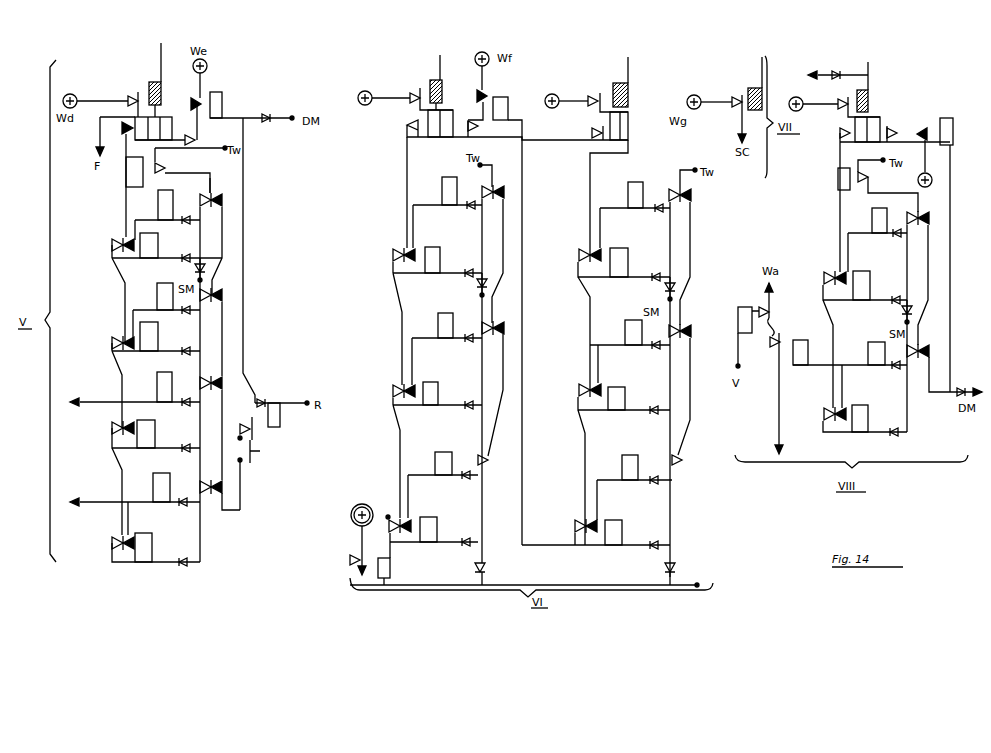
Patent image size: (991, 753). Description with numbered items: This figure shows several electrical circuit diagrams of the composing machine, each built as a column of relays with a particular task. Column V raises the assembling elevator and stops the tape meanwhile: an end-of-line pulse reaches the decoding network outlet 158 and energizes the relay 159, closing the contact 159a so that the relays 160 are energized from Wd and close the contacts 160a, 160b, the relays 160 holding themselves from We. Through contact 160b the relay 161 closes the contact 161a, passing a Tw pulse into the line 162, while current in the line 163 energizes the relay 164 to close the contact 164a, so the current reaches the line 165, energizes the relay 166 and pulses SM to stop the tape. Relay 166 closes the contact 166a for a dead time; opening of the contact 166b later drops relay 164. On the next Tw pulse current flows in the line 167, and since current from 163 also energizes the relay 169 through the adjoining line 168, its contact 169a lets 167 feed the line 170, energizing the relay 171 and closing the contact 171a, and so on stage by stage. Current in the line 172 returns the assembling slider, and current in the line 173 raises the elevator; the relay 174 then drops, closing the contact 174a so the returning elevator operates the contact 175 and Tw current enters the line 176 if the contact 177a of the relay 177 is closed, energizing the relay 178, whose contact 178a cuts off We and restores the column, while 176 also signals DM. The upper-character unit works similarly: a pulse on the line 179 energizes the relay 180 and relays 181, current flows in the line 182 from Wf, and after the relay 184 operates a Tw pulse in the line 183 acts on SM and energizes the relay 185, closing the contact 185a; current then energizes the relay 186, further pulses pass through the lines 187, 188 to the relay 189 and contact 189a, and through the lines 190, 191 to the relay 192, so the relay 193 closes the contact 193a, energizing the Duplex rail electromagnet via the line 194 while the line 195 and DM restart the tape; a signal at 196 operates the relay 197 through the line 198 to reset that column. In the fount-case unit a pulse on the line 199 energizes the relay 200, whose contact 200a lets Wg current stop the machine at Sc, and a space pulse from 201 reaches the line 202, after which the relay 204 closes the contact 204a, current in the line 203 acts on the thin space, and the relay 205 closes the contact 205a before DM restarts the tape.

The decoding network outlet 158 is at (160, 68).
The relay 159 is at (150, 84).
The contact 159a is at (130, 94).
The relays 160 is at (161, 118).
The contact 160a is at (192, 136).
The contact 160b is at (122, 128).
The relay 161 is at (126, 174).
The contact 161a is at (163, 166).
The line 162 is at (211, 180).
The line 163 is at (126, 208).
The relay 164 is at (158, 202).
The contact 164a is at (200, 200).
The line 165 is at (198, 236).
The relay 166 is at (150, 258).
The contact 166a is at (112, 246).
The contact 166b is at (126, 240).
The line 167 is at (223, 236).
The bus line 168 is at (124, 298).
The relay 169 is at (157, 296).
The contact 169a is at (212, 290).
The line 170 is at (199, 326).
The relay 171 is at (152, 338).
The contact 171a is at (112, 344).
The line 172 is at (110, 400).
The line 173 is at (108, 502).
The relay 174 is at (160, 482).
The contact 174a is at (205, 493).
The contact 175 is at (262, 456).
The line 176 is at (244, 342).
The relay 177 is at (274, 410).
The contact 177a is at (253, 436).
The relay 178 is at (222, 104).
The contact 178a is at (200, 98).
The line 179 is at (440, 62).
The relay 180 is at (442, 88).
The relays 181 is at (441, 138).
The line 182 is at (406, 160).
The line 183 is at (474, 213).
The relay 184 is at (442, 192).
The relay 185 is at (441, 262).
The contact 185a is at (395, 254).
The relay 186 is at (441, 320).
The line 187 is at (522, 222).
The line 188 is at (482, 364).
The relay 189 is at (431, 406).
The contact 189a is at (395, 392).
The line 190 is at (504, 391).
The line 191 is at (481, 518).
The relay 192 is at (430, 520).
The relay 193 is at (391, 566).
The contact 193a is at (390, 530).
The line 194 is at (350, 539).
The line 195 is at (595, 584).
The signal input 196 is at (628, 72).
The relay 197 is at (500, 98).
The line 198 is at (522, 320).
The line 199 is at (760, 67).
The relay 200 is at (738, 110).
The contact 200a is at (735, 95).
The pulse source 201 is at (870, 82).
The line 202 is at (838, 67).
The line 203 is at (778, 425).
The relay 204 is at (806, 350).
The contact 204a is at (772, 351).
The relay 205 is at (745, 321).
The contact 205a is at (762, 306).